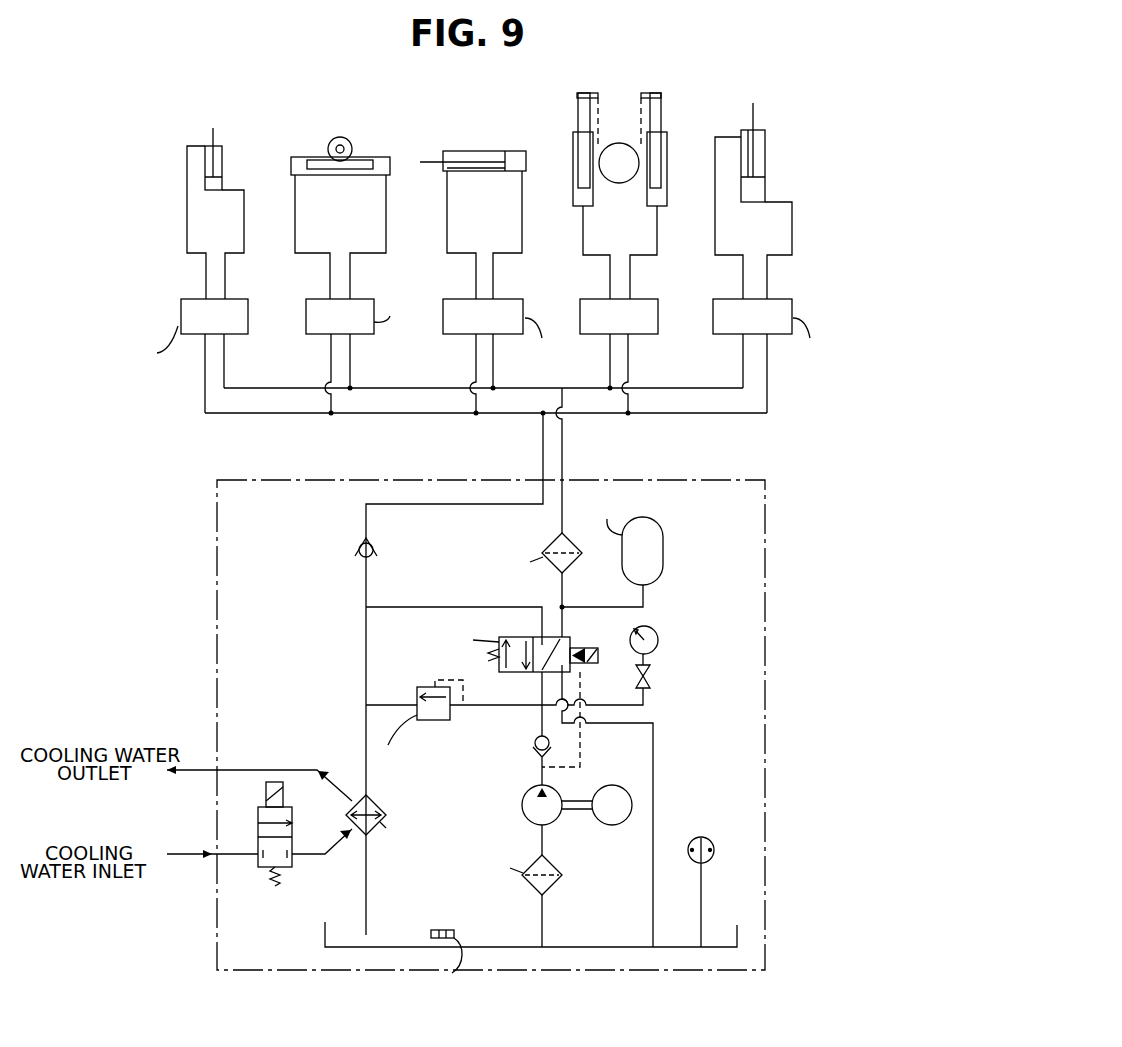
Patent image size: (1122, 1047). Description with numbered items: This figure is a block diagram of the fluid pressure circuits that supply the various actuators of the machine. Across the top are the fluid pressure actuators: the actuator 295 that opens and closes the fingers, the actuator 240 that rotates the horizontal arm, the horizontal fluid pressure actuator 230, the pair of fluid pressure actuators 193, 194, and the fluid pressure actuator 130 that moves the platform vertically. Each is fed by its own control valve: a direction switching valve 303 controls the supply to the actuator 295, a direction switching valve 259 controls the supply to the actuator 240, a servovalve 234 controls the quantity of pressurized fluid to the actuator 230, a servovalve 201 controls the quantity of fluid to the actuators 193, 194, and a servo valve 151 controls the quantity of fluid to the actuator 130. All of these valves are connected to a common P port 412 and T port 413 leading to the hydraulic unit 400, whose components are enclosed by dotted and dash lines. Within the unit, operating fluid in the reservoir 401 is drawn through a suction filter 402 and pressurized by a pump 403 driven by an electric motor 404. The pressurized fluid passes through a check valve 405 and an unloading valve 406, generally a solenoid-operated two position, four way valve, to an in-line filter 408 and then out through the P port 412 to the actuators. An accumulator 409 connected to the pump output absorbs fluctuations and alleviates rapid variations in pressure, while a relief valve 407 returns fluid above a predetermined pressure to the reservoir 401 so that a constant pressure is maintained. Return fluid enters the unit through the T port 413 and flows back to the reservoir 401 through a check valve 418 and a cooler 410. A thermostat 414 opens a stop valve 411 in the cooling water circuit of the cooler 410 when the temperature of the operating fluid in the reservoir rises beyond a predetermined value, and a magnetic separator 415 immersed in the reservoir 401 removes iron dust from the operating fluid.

The fluid pressure actuator 295 is at (222, 145).
The fluid pressure actuator 240 is at (303, 157).
The horizontal fluid pressure actuator 230 is at (480, 150).
The fluid pressure actuator 193 is at (580, 197).
The fluid pressure actuator 194 is at (662, 197).
The fluid pressure actuator 130 is at (748, 130).
The direction switching valve 303 is at (140, 351).
The direction switching valve 259 is at (384, 295).
The servovalve 234 is at (531, 330).
The servovalve 201 is at (619, 316).
The servo valve 151 is at (801, 330).
The hydraulic unit 400 is at (245, 477).
The T port 413 is at (543, 479).
The P port 412 is at (562, 479).
The check valve 418 is at (375, 543).
The in-line filter 408 is at (543, 548).
The accumulator 409 is at (663, 543).
The unloading valve 406 is at (523, 637).
The relief valve 407 is at (409, 736).
The check valve 405 is at (534, 742).
The electric motor 404 is at (612, 785).
The pump 403 is at (522, 803).
The suction filter 402 is at (558, 883).
The thermostat 414 is at (701, 838).
The reservoir 401 is at (725, 948).
The magnetic separator 415 is at (436, 930).
The cooler 410 is at (386, 805).
The stop valve 411 is at (292, 860).